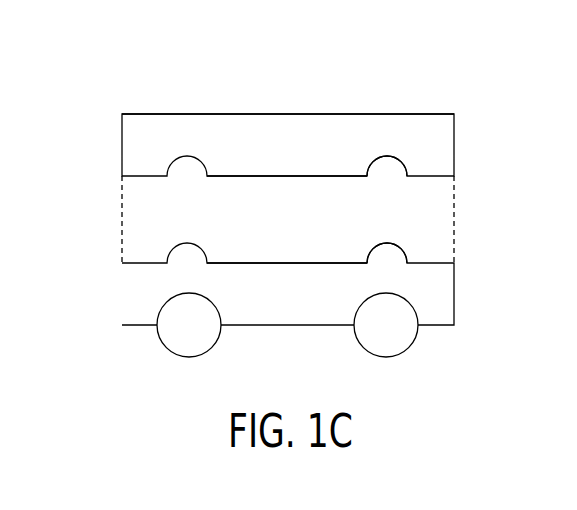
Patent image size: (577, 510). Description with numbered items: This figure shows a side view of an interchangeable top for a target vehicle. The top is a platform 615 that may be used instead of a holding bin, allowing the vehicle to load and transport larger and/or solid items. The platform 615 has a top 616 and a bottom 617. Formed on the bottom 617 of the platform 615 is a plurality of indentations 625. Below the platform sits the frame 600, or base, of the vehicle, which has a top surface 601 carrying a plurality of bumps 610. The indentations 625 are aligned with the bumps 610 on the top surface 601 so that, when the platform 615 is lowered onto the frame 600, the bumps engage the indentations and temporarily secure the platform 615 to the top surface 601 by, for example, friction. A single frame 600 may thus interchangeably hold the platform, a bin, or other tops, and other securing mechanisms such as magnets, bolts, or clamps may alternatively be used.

The frame 600 is at (285, 326).
The top surface 601 is at (287, 263).
The bumps 610 is at (388, 243).
The platform 615 is at (333, 138).
The top 616 is at (287, 114).
The bottom 617 is at (289, 176).
The indentations 625 is at (388, 157).